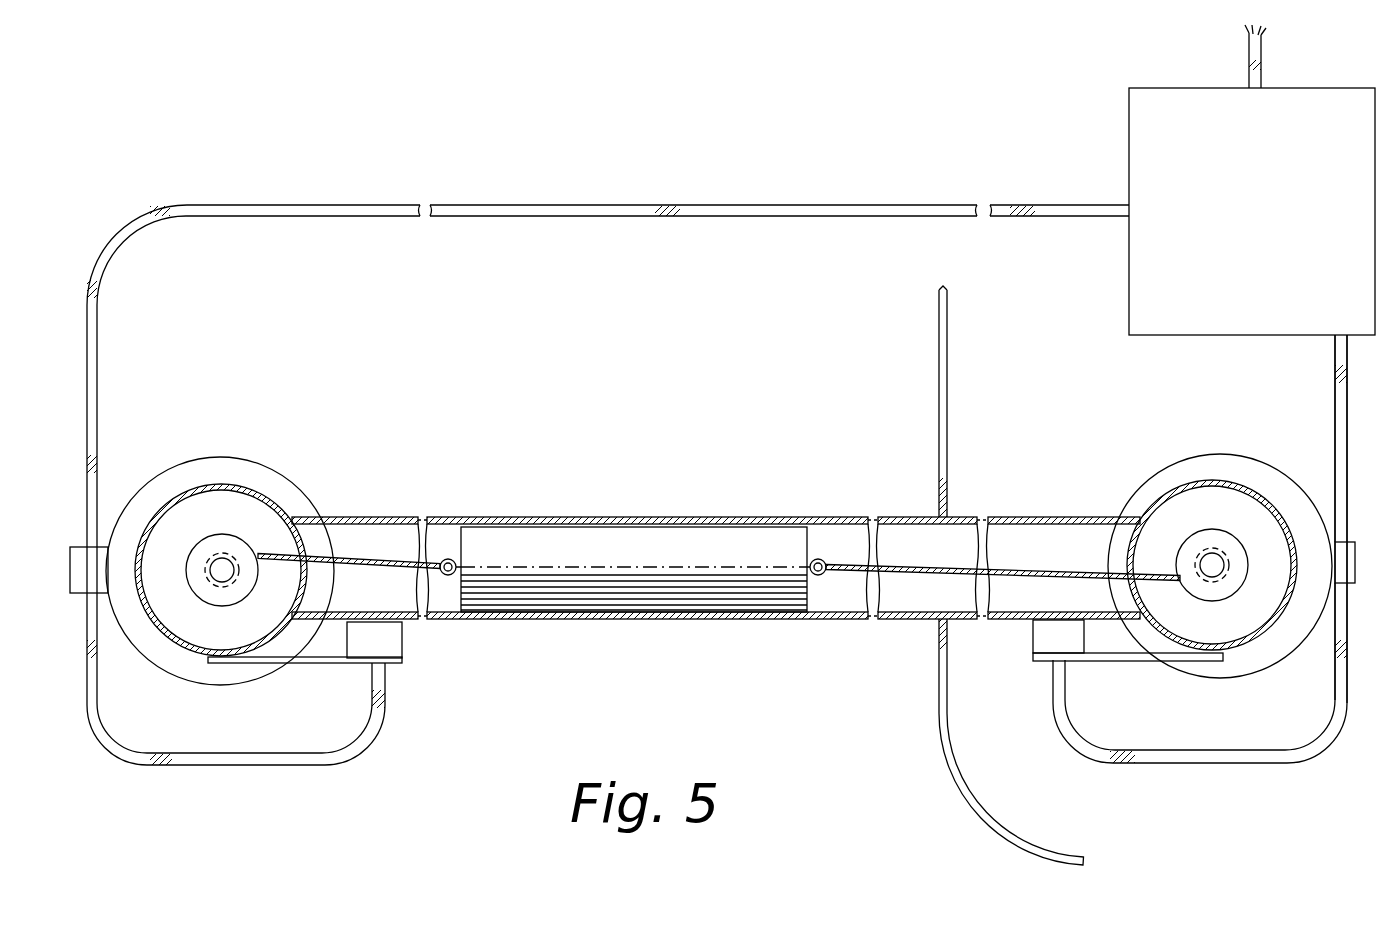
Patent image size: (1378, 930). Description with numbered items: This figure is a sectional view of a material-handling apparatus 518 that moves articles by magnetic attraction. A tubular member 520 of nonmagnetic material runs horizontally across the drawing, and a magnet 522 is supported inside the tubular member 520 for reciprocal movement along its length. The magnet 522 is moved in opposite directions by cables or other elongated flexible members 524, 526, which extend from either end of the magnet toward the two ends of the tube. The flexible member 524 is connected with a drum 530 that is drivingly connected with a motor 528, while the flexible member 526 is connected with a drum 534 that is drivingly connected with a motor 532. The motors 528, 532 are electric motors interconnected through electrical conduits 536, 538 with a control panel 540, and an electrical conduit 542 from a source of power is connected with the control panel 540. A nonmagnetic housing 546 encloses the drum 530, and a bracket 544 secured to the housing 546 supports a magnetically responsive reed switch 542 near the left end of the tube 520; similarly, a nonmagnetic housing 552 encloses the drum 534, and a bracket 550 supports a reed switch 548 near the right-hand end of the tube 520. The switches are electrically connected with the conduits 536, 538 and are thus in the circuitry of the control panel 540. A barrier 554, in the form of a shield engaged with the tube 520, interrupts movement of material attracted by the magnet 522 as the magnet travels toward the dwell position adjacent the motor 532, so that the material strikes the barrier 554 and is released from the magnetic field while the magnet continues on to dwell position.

The apparatus for handling material by magnetic attraction 518 is at (565, 500).
The tubular member 520 is at (676, 518).
The magnet 522 is at (737, 537).
The flexible member 524 is at (390, 566).
The flexible member 526 is at (1090, 575).
The motor 528 is at (293, 495).
The drum 530 is at (230, 548).
The motor 532 is at (1203, 465).
The drum 534 is at (1220, 546).
The electrical conduit 536 is at (690, 205).
The electrical conduit 538 is at (1333, 395).
The control panel 540 is at (1145, 138).
The electrical conduit / reed switch 542 is at (1248, 55).
The bracket 544 is at (335, 663).
The nonmagnetic housing 546 is at (207, 486).
The reed switch 548 is at (1047, 635).
The bracket 550 is at (1110, 655).
The nonmagnetic housing 552 is at (1243, 650).
The barrier 554 is at (942, 714).